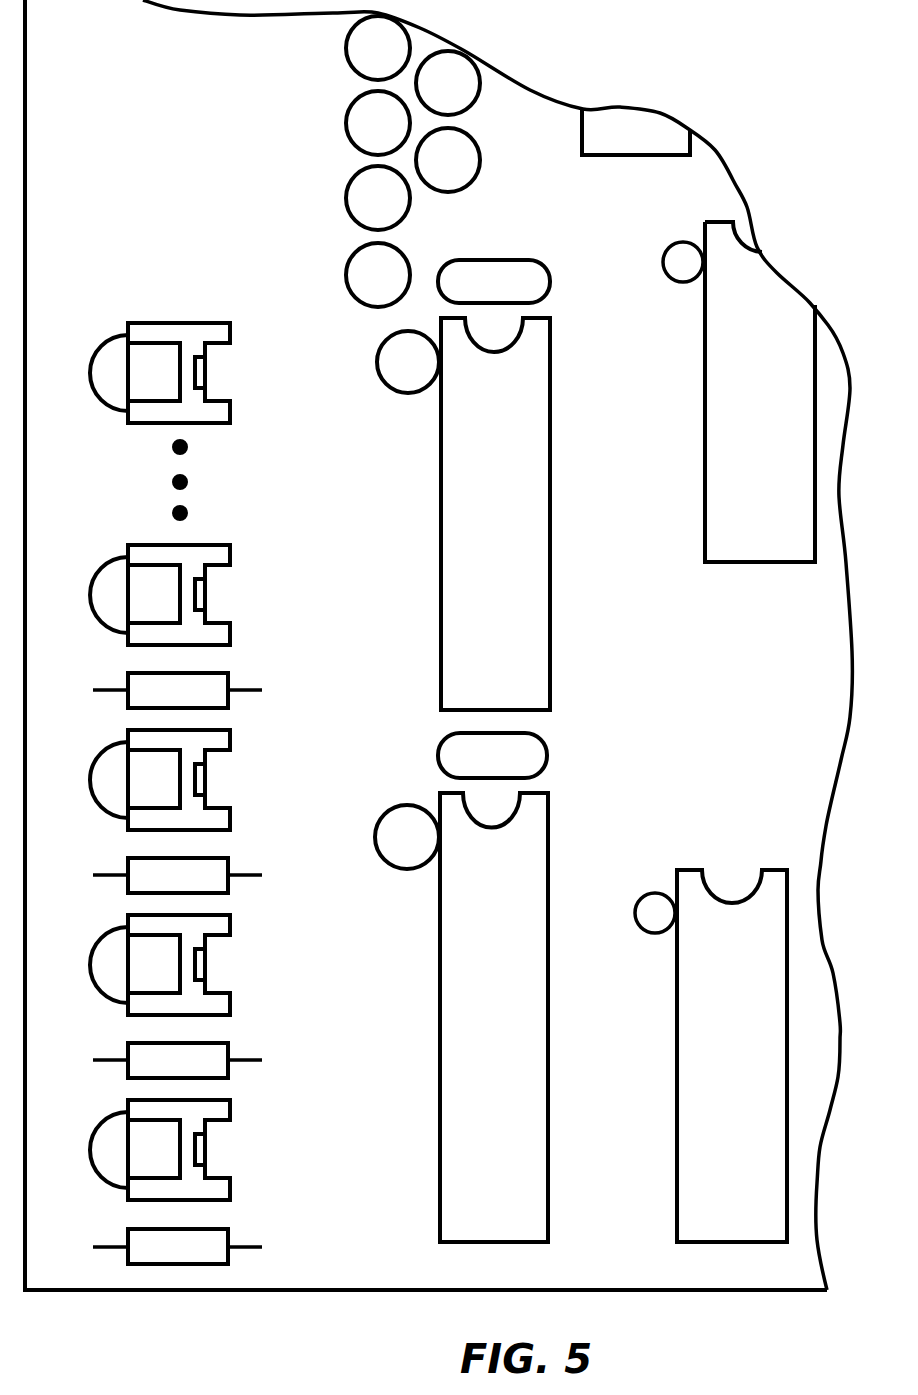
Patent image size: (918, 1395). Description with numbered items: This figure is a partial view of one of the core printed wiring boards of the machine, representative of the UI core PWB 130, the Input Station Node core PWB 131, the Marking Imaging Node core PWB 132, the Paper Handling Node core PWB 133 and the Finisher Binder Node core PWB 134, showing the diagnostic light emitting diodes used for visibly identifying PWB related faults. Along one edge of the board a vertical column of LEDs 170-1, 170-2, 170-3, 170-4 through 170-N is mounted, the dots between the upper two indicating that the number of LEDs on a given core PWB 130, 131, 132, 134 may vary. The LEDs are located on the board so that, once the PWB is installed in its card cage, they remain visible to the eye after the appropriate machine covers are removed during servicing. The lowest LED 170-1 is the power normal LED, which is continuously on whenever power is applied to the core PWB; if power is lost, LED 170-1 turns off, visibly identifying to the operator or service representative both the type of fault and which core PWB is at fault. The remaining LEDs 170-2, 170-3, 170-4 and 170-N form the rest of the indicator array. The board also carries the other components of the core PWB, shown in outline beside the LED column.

The UI core PWB 130 is at (438, 679).
The Input Station Node (ISN) core PWB 131 is at (438, 679).
The Marking Imaging Node (MIN) core PWB 132 is at (438, 679).
The Paper Handling Node (PHN) core PWB 133 is at (438, 679).
The Finisher Binder Node (FBN) core PWB 134 is at (89, 1296).
The light emitting diode 170-N is at (240, 378).
The light emitting diode 170-4 is at (235, 601).
The light emitting diode 170-3 is at (235, 786).
The light emitting diode 170-2 is at (235, 971).
The power normal LED 170-1 is at (245, 1156).